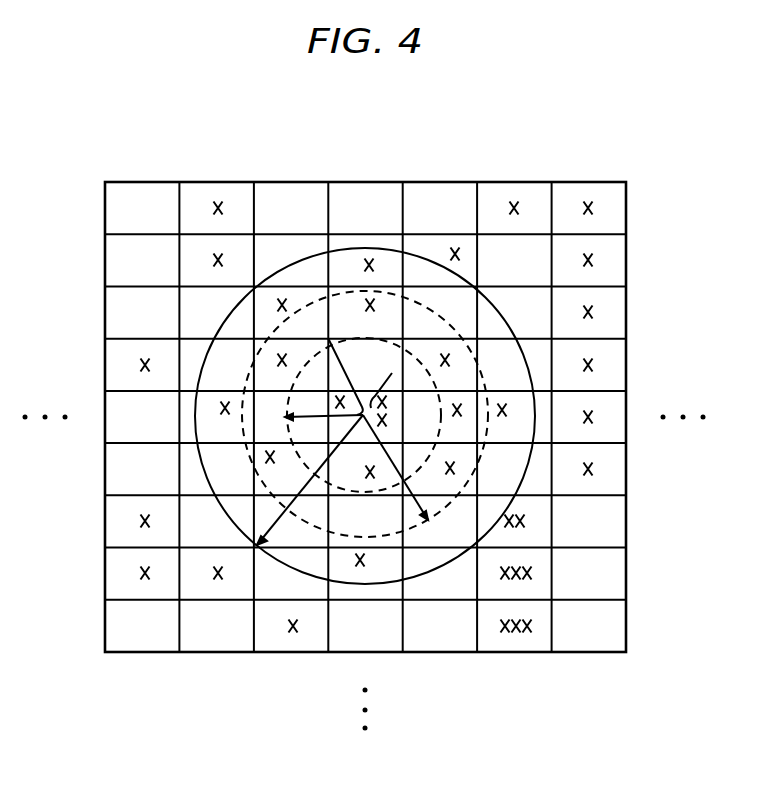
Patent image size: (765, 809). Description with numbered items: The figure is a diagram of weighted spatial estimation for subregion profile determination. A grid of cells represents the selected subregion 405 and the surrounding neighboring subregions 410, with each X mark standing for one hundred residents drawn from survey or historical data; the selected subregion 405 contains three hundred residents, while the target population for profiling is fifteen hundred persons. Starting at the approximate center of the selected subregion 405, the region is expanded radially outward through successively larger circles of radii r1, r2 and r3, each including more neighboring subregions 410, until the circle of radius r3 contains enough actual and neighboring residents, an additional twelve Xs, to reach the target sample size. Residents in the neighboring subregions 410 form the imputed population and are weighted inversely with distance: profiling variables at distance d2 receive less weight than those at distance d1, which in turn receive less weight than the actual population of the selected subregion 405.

The selected subregion 405 is at (340, 430).
The neighboring subregions 410 is at (233, 360).
The first radius r1 is at (324, 403).
The second radius r2 is at (395, 469).
The third radius r3 is at (305, 480).
The first distance d1 is at (440, 358).
The second distance d2 is at (280, 292).